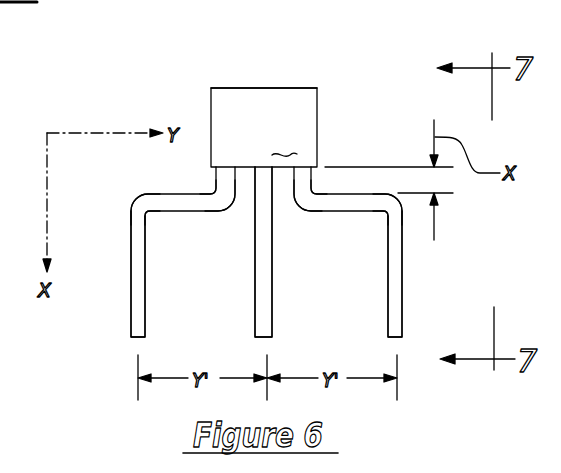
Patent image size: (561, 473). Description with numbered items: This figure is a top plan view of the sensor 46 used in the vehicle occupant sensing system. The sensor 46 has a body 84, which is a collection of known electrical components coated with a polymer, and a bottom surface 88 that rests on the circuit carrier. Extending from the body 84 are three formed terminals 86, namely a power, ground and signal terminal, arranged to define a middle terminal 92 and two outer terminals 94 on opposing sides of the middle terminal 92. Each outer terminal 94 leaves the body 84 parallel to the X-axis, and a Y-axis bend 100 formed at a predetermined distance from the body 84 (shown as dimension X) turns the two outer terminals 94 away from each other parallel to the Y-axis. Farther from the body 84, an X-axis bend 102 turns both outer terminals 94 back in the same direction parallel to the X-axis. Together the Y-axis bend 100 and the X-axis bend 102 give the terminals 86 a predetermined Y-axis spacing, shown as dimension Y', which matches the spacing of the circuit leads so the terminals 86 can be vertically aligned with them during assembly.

The sensor 46 is at (263, 101).
The body 84 is at (223, 110).
The terminals 86 is at (114, 314).
The bottom surface 88 is at (284, 143).
The middle terminal 92 is at (272, 244).
The outer terminals 94 is at (137, 270).
The Y-axis bend 100 is at (220, 200).
The X-axis bend 102 is at (140, 208).